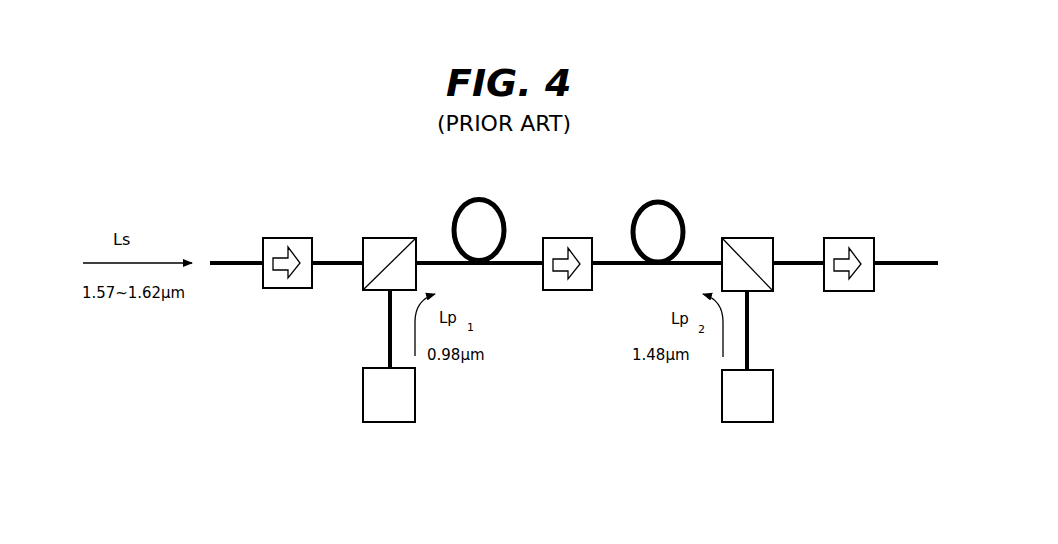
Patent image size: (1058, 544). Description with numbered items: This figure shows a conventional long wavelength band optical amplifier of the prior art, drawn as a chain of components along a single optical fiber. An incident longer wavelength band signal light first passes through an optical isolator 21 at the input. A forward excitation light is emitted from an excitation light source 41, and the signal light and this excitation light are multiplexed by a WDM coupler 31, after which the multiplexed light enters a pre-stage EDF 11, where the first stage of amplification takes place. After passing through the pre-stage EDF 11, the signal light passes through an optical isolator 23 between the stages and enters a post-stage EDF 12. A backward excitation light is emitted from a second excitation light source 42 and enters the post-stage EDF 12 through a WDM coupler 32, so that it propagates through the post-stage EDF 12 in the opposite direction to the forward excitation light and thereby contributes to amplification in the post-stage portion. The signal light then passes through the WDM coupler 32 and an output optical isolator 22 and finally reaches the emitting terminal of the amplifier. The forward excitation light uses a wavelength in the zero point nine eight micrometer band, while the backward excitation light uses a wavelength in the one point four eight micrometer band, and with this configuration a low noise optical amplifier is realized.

The pre-stage EDF 11 is at (504, 209).
The post-stage EDF 12 is at (683, 209).
The optical isolator 21 is at (263, 239).
The optical isolator 22 is at (875, 239).
The optical isolator 23 is at (566, 239).
The WDM coupler 31 is at (364, 239).
The WDM coupler 32 is at (773, 239).
The excitation light source 41 is at (363, 422).
The excitation light source 42 is at (773, 422).